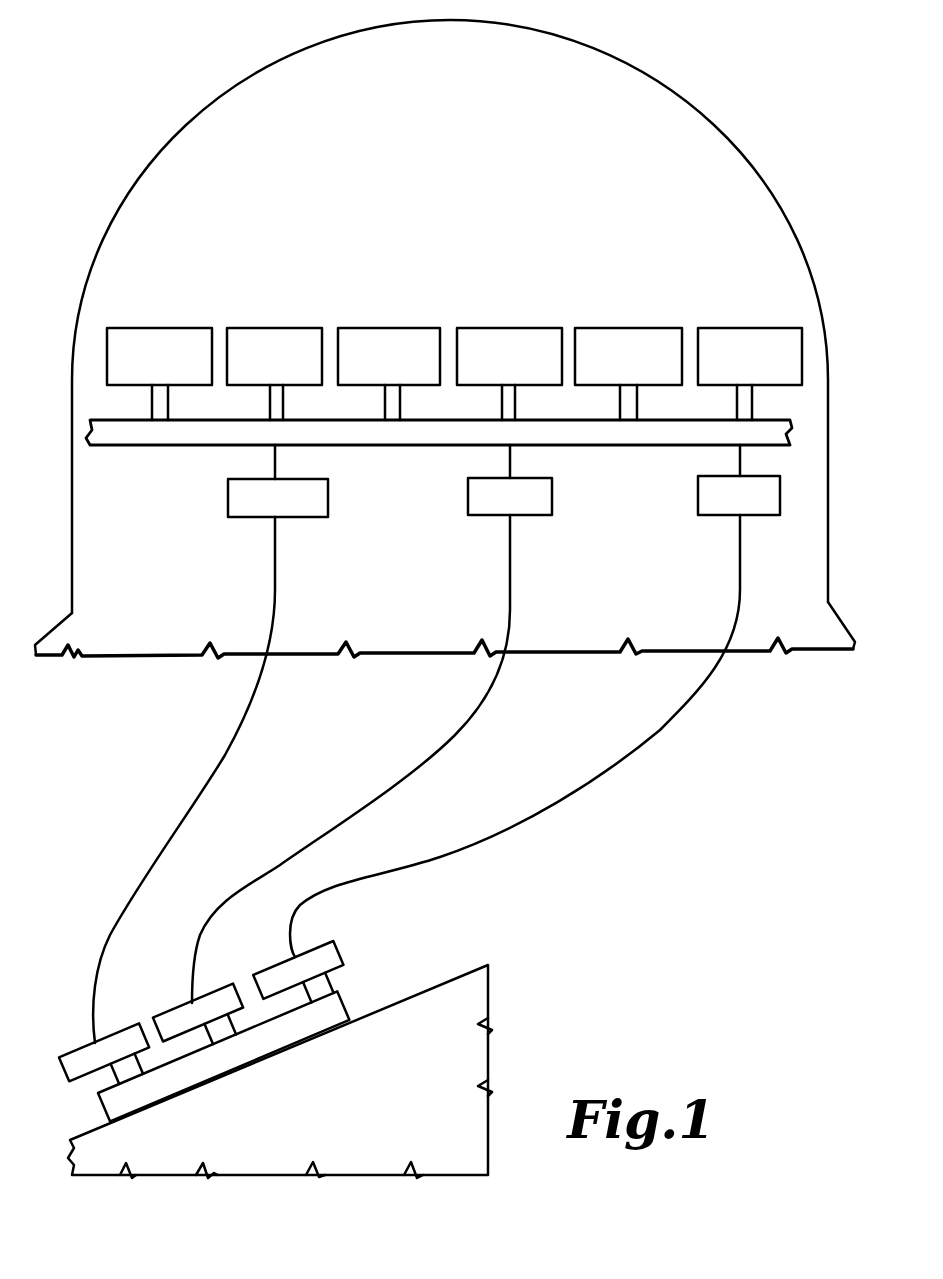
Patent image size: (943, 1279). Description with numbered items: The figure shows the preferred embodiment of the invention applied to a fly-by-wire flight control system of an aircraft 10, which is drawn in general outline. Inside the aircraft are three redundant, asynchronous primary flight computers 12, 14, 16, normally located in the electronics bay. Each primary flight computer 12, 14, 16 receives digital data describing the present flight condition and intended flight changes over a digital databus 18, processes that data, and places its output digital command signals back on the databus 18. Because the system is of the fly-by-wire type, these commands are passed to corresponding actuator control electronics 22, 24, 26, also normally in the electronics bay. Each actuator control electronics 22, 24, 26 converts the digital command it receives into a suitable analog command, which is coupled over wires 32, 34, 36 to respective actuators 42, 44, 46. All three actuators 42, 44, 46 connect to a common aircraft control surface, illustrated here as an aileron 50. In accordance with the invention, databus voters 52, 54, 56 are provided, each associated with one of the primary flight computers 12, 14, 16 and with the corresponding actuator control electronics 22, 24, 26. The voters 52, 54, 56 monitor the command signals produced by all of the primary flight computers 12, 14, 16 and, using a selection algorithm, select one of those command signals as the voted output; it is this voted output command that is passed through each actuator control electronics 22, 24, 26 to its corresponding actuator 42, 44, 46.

The aircraft 10 is at (707, 120).
The primary flight computer 12 is at (278, 328).
The primary flight computer 14 is at (510, 328).
The primary flight computer 16 is at (743, 328).
The digital databus 18 is at (790, 418).
The actuator control electronics 22 is at (305, 517).
The actuator control electronics 24 is at (524, 515).
The actuator control electronics 26 is at (757, 515).
The wire 32 is at (240, 733).
The wire 34 is at (450, 740).
The wire 36 is at (628, 750).
The actuator 42 is at (72, 1048).
The actuator 44 is at (172, 1009).
The actuator 46 is at (282, 963).
The aileron 50 is at (190, 1077).
The databus voter 52 is at (162, 328).
The databus voter 54 is at (375, 328).
The databus voter 56 is at (627, 328).